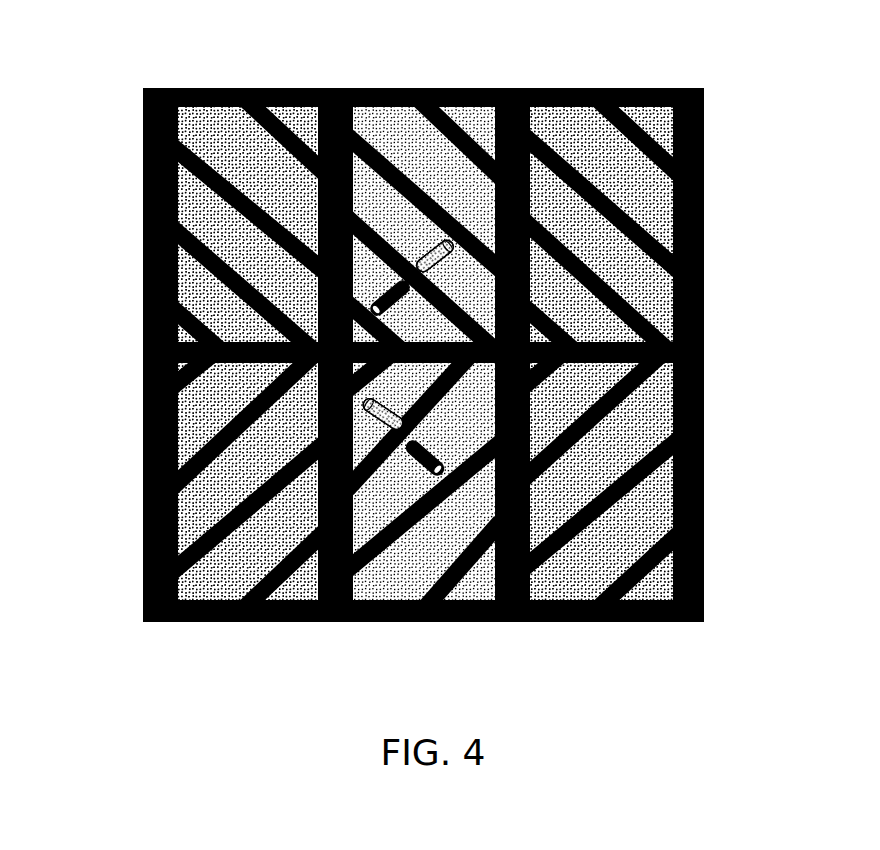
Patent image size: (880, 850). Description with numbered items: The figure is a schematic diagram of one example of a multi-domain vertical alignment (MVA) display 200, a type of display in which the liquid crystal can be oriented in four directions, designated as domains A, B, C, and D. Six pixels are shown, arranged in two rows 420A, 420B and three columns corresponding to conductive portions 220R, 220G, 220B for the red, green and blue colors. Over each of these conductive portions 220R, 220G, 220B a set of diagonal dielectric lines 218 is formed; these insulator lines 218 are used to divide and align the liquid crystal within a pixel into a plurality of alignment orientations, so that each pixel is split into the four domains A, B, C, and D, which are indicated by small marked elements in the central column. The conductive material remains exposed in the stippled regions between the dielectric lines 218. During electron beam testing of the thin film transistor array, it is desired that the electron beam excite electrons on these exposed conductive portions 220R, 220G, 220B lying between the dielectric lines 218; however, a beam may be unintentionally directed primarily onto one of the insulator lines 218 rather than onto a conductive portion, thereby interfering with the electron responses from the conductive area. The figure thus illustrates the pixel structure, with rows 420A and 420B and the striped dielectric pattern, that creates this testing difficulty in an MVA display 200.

The display pixel array 200 is at (740, 297).
The dielectric lines 218 is at (286, 133).
The conductive portion 220R is at (277, 580).
The conductive portion 220G is at (467, 581).
The conductive portion 220B is at (642, 586).
The first pixel row 420A is at (127, 88).
The second pixel row 420B is at (127, 356).
The domain A is at (439, 263).
The domain B is at (395, 305).
The domain C is at (430, 455).
The domain D is at (387, 407).